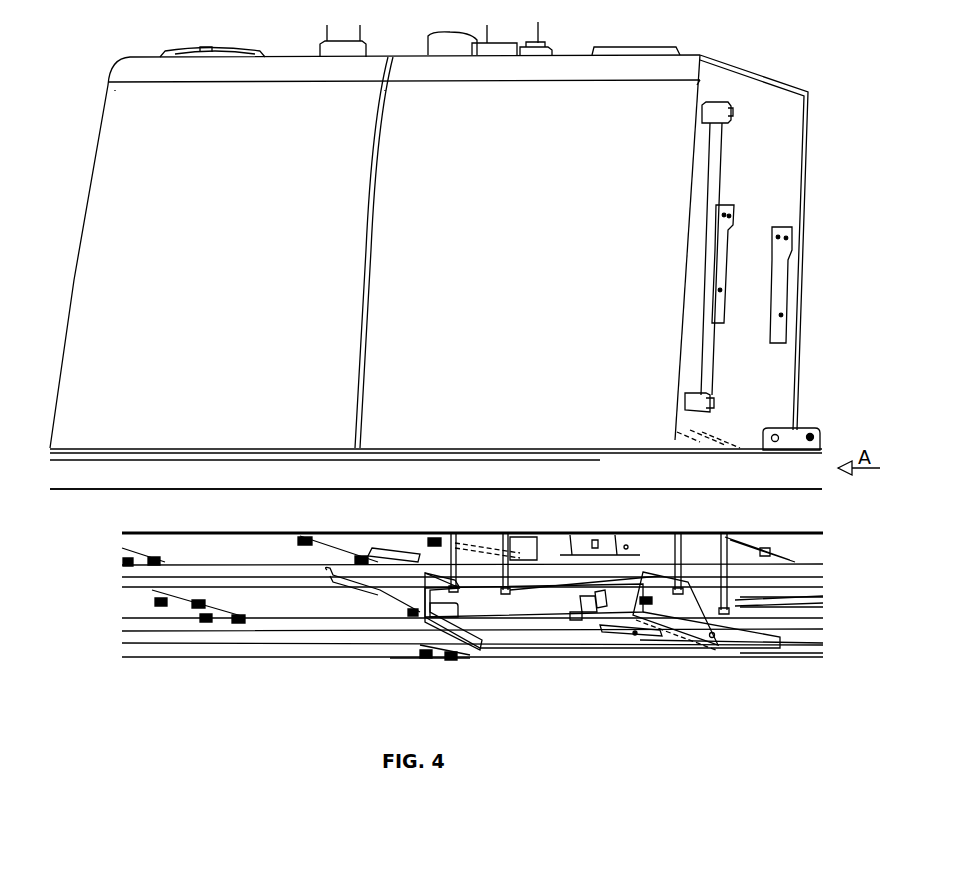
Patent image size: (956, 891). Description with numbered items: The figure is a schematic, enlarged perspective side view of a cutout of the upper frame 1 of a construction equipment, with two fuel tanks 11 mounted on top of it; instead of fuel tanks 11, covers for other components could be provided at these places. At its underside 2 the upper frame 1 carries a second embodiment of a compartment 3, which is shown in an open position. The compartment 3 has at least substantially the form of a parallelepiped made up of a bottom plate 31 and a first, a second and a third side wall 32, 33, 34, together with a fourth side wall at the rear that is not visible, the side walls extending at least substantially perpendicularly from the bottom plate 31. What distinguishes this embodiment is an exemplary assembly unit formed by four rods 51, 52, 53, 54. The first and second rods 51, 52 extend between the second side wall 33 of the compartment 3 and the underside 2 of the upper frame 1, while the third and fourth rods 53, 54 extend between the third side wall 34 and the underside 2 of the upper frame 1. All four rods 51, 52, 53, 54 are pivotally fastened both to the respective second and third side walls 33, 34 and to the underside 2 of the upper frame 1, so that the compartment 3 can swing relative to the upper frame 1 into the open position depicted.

The upper frame 1 is at (70, 62).
The underside 2 is at (175, 497).
The compartment 3 is at (577, 664).
The fuel tanks 11 is at (220, 249).
The bottom plate 31 is at (565, 645).
The first side wall 32 is at (560, 611).
The second side wall 33 is at (425, 578).
The third side wall 34 is at (687, 616).
The first rod 51 is at (450, 578).
The second rod 52 is at (508, 542).
The third rod 53 is at (683, 583).
The fourth rod 54 is at (722, 613).